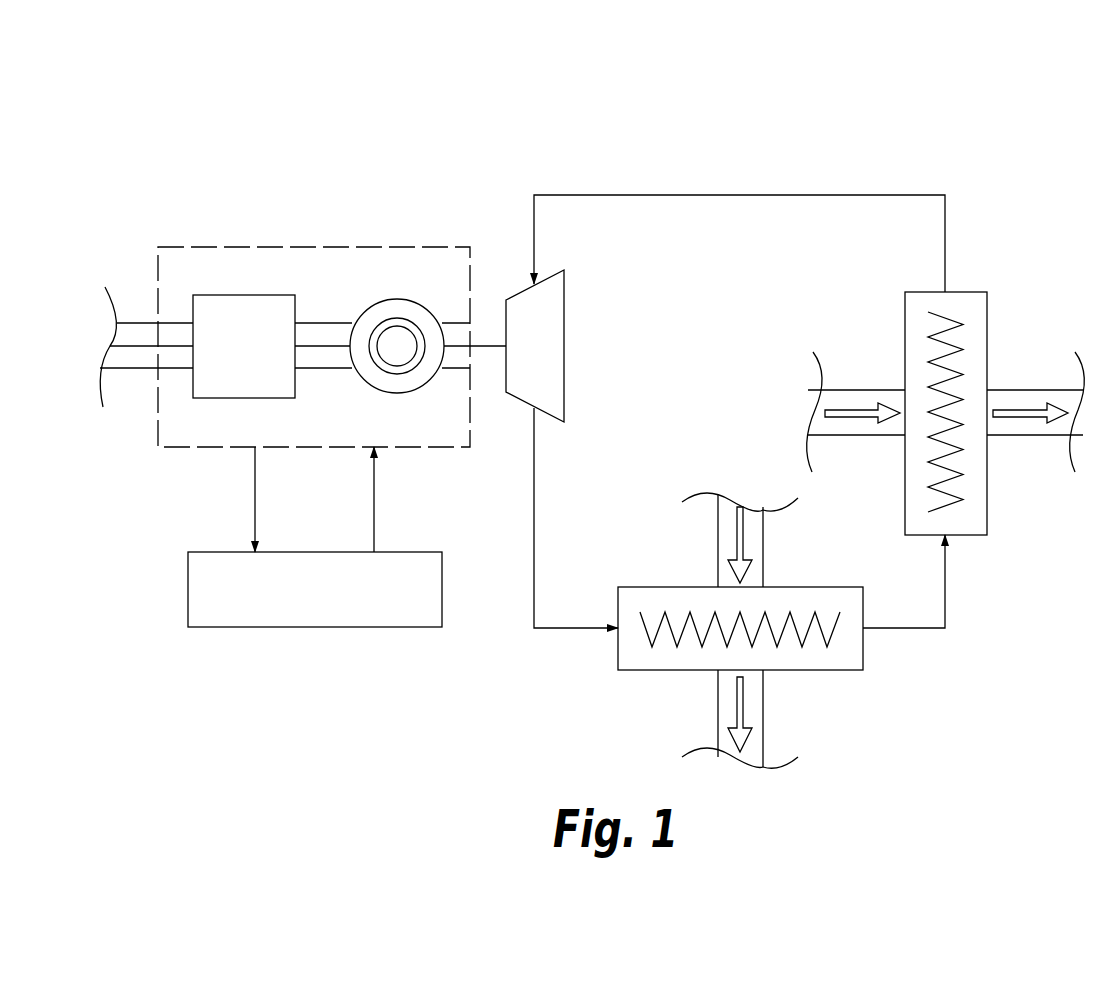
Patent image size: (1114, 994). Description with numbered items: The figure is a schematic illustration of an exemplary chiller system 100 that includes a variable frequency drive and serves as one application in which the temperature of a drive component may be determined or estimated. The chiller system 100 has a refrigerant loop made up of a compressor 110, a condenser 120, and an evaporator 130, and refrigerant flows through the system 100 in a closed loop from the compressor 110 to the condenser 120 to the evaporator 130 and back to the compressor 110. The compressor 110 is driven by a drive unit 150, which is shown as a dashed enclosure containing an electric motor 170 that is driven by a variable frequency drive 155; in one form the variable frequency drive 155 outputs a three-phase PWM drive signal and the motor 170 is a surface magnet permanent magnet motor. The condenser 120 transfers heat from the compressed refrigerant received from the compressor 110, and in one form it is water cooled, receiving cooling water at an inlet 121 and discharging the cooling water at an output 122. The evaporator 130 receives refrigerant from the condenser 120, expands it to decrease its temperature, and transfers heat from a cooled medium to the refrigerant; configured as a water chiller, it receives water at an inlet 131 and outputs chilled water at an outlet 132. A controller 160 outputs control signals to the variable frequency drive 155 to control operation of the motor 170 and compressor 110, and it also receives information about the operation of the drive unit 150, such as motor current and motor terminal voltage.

The chiller system 100 is at (962, 123).
The compressor 110 is at (563, 310).
The condenser 120 is at (812, 587).
The inlet 121 is at (718, 538).
The output 122 is at (763, 718).
The evaporator 130 is at (977, 291).
The inlet 131 is at (855, 388).
The outlet 132 is at (1033, 390).
The drive unit 150 is at (280, 247).
The variable frequency drive 155 is at (203, 295).
The controller 160 is at (308, 628).
The electric motor 170 is at (362, 303).